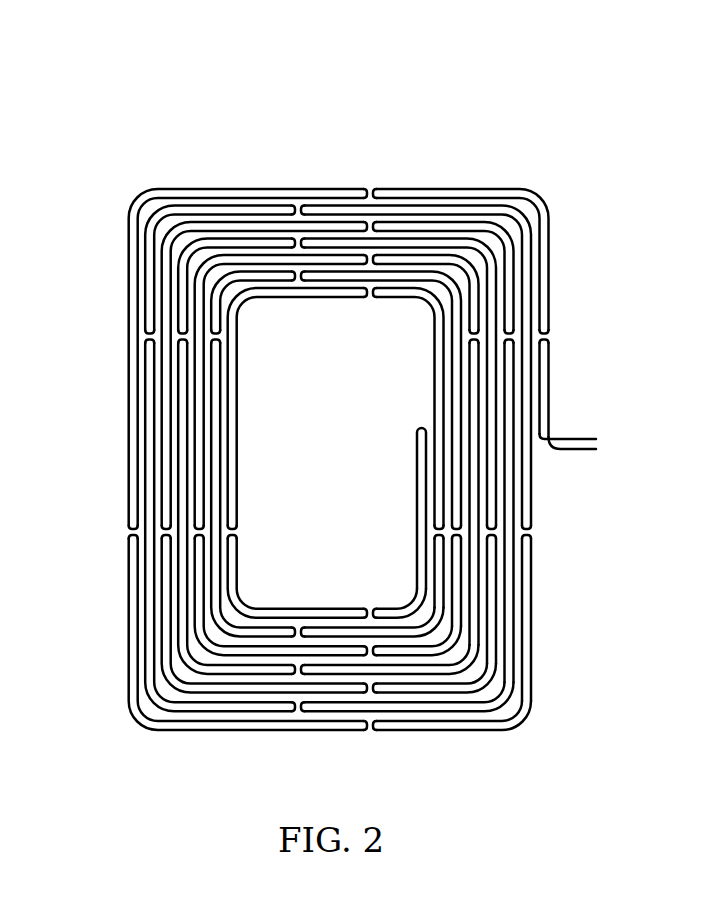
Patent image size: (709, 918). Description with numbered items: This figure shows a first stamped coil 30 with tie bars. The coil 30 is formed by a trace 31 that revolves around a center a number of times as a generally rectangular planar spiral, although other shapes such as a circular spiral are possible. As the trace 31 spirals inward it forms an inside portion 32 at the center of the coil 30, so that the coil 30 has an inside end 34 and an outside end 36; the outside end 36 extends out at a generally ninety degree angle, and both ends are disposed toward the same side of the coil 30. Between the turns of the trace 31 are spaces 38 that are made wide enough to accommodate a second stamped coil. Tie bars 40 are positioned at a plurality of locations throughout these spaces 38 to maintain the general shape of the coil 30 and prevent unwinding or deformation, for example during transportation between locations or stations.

The first stamped coil 30 is at (370, 396).
The trace 31 is at (492, 606).
The inside portion 32 is at (343, 343).
The inside end 34 is at (420, 428).
The outside end 36 is at (598, 444).
The spaces 38 is at (196, 372).
The tie bars 40 is at (296, 203).